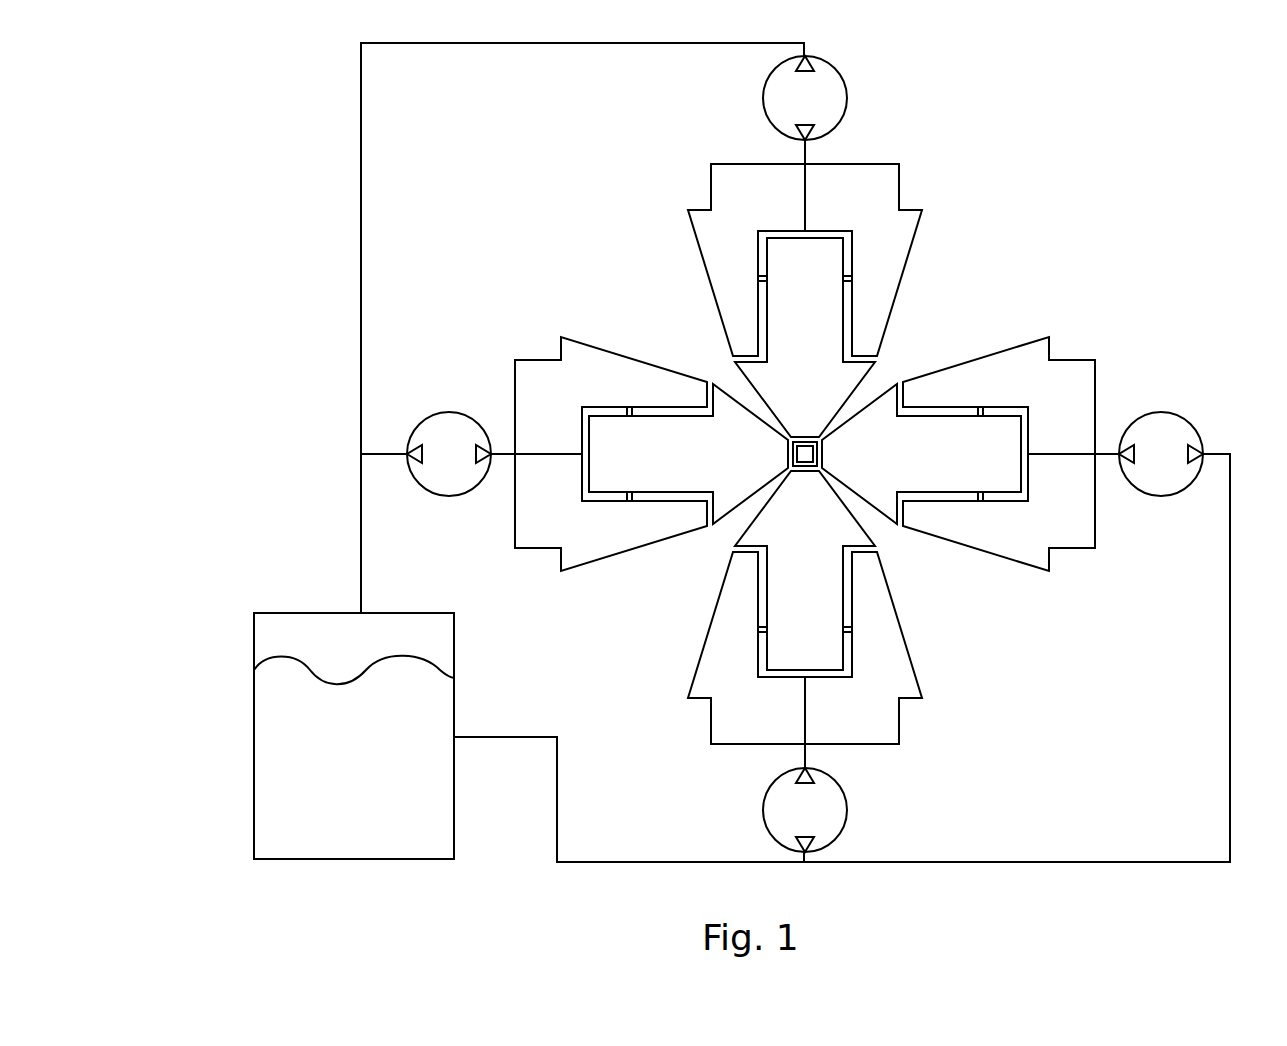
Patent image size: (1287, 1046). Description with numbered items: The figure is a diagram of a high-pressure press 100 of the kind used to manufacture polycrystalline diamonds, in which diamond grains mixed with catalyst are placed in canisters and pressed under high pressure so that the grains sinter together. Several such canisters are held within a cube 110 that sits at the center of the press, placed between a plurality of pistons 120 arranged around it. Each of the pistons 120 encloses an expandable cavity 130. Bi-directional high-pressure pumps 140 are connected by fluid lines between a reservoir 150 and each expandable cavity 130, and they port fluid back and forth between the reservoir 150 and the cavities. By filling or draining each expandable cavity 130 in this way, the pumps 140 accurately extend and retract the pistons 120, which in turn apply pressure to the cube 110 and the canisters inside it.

The high-pressure press 100 is at (1160, 177).
The cube 110 is at (947, 358).
The pistons 120 is at (815, 436).
The expandable cavity 130 is at (805, 450).
The bi-directional high-pressure pumps 140 is at (805, 454).
The reservoir 150 is at (322, 764).